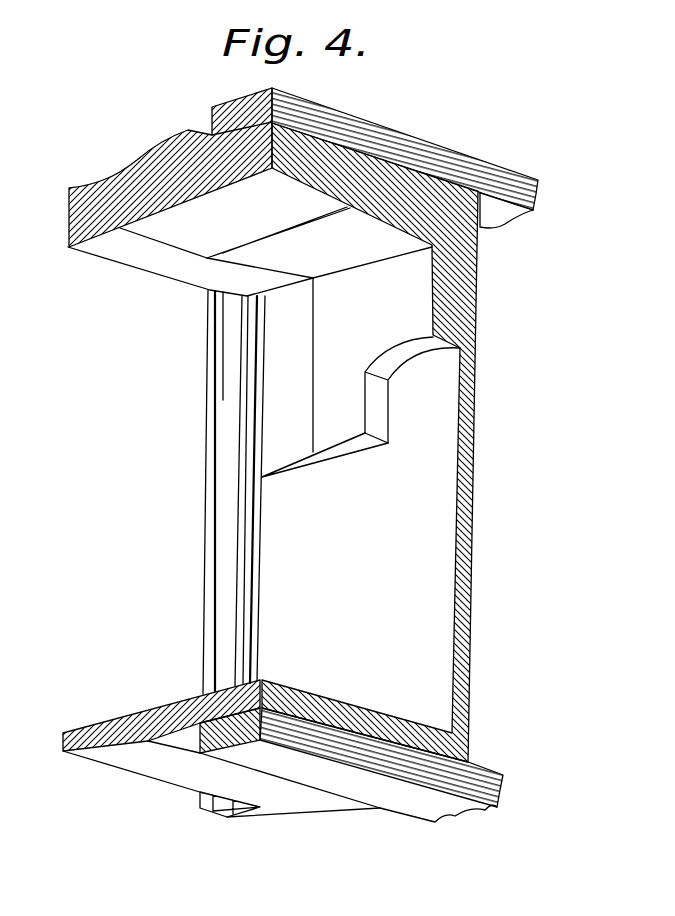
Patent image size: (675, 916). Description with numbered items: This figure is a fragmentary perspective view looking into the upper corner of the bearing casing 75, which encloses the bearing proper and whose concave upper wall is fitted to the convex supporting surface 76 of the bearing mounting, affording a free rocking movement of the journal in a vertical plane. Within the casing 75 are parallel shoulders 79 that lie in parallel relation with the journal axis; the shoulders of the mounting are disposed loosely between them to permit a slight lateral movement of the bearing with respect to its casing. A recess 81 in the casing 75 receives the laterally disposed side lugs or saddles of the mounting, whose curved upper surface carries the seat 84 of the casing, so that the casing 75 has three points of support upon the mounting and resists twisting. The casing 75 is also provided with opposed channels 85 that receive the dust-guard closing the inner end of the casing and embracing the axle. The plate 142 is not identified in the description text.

The plate 142 is at (537, 189).
The casing 75 is at (465, 292).
The convex supporting surface 76 is at (190, 246).
The parallel shoulders 79 is at (330, 218).
The recess 81 is at (430, 380).
The seat 84 is at (415, 352).
The opposed channels 85 is at (230, 412).